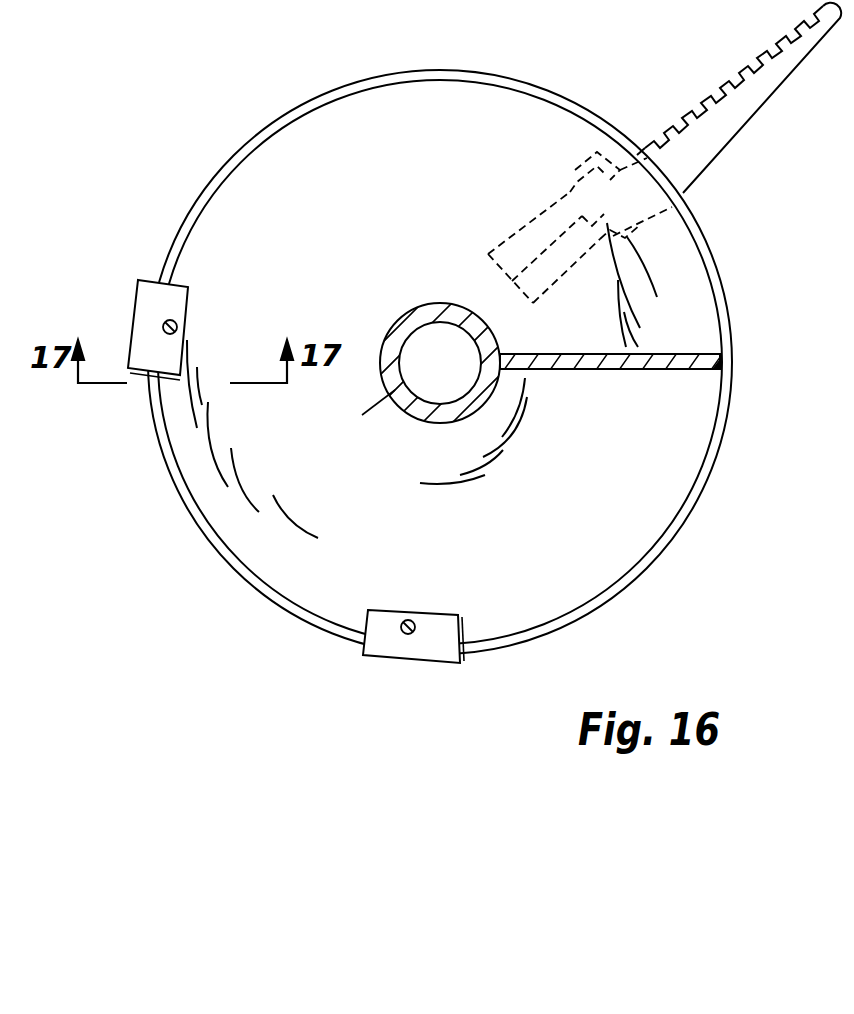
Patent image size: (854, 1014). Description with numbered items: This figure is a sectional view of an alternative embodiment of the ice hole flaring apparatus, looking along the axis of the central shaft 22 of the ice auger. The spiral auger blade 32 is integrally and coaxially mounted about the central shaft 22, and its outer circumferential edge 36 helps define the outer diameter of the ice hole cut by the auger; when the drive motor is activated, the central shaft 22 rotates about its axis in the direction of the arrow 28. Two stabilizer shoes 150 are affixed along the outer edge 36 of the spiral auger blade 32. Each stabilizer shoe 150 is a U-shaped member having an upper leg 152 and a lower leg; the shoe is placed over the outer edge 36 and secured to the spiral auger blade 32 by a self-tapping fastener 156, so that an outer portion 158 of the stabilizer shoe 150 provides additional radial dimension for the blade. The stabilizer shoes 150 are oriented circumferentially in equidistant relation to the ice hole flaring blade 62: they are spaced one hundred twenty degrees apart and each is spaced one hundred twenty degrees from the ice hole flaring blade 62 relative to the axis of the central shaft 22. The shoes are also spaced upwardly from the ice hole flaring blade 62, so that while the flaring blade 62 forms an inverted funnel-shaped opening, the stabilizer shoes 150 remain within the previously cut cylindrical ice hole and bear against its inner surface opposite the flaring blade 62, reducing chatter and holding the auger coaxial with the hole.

The central shaft 22 is at (385, 398).
The direction of rotation arrow 28 is at (768, 407).
The spiral auger blade 32 is at (420, 203).
The outer circumferential edge 36 is at (298, 118).
The ice hole flaring blade 62 is at (729, 115).
The stabilizer shoe 150 is at (160, 297).
The upper leg 152 is at (177, 285).
The self-tapping fastener 156 is at (176, 322).
The outer portion 158 is at (138, 323).